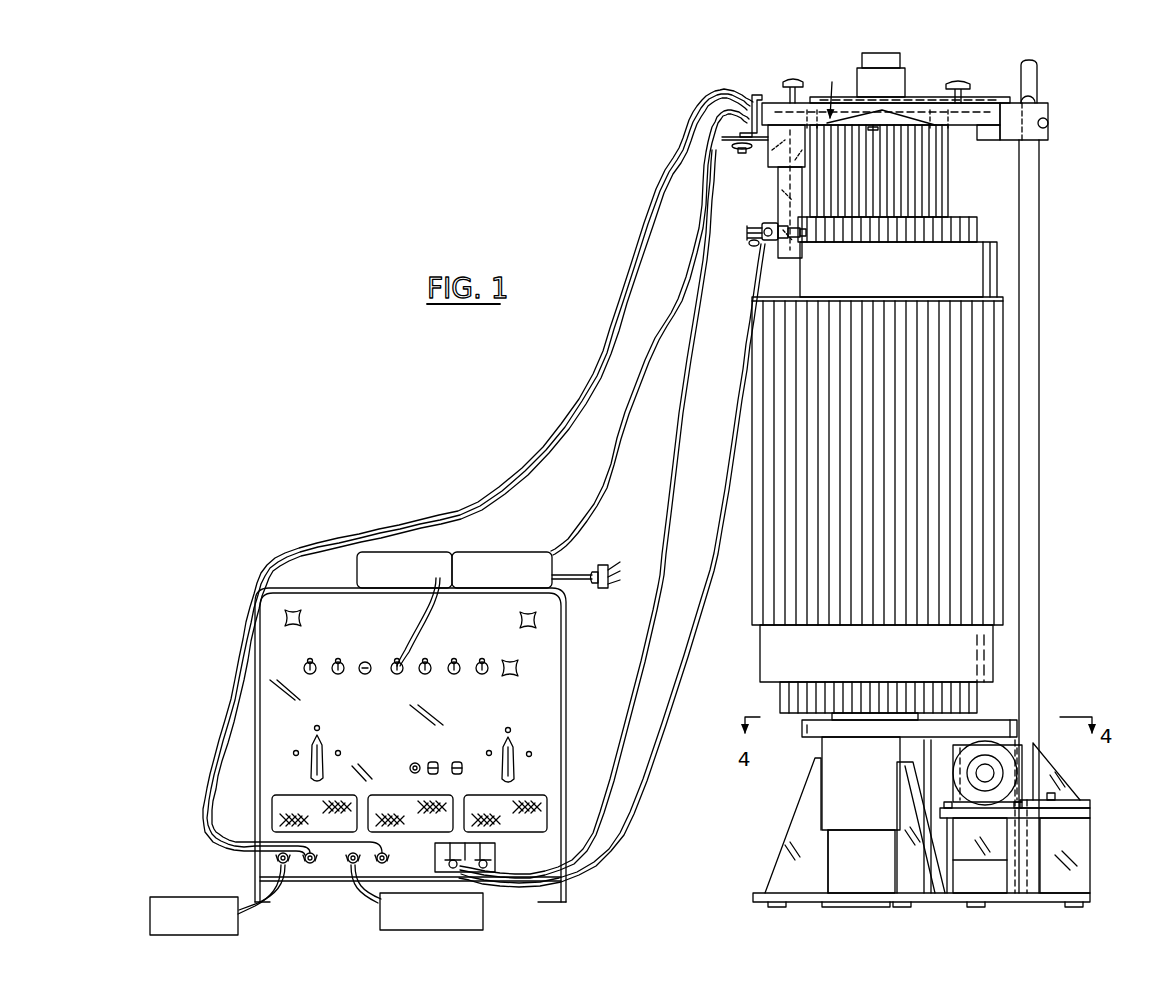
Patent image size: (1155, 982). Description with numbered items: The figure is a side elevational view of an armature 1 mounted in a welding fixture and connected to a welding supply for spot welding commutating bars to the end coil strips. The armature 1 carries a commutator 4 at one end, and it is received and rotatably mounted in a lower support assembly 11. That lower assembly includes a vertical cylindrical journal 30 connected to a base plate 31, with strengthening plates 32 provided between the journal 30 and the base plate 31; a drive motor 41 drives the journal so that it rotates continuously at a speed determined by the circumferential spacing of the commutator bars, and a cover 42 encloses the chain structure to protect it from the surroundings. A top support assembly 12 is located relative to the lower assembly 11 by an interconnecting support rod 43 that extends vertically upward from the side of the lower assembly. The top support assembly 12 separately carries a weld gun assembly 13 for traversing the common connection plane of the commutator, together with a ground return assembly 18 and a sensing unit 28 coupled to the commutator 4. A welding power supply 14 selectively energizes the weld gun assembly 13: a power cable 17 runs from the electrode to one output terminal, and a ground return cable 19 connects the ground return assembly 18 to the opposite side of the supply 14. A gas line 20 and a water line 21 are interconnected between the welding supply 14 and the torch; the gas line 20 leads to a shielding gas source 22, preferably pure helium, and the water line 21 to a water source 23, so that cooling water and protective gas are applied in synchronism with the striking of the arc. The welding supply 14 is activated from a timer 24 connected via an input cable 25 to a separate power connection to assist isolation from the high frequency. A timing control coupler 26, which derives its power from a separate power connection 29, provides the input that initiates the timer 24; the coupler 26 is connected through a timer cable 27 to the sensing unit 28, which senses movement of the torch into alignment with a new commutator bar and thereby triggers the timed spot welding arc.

The armature 1 is at (747, 620).
The commutator 4 is at (956, 211).
The lower support assembly 11 is at (790, 806).
The top support assembly 12 is at (931, 88).
The weld gun assembly 13 is at (778, 197).
The welding power supply 14 is at (573, 740).
The power cable 17 is at (684, 420).
The ground return assembly 18 is at (757, 250).
The ground return cable 19 is at (661, 743).
The gas line 20 is at (387, 855).
The water line 21 is at (313, 861).
The shielding gas source 22 is at (483, 919).
The water source 23 is at (150, 913).
The timer 24 is at (432, 552).
The input cable 25 is at (427, 619).
The timing control coupler 26 is at (494, 550).
The timer cable 27 is at (627, 402).
The sensing unit 28 is at (827, 87).
The power connection 29 is at (585, 567).
The vertical cylindrical journal 30 is at (871, 806).
The base plate 31 is at (1068, 894).
The strengthening plates 32 is at (830, 866).
The drive motor 41 is at (995, 771).
The cover 42 is at (820, 731).
The interconnecting support rod 43 is at (1040, 365).